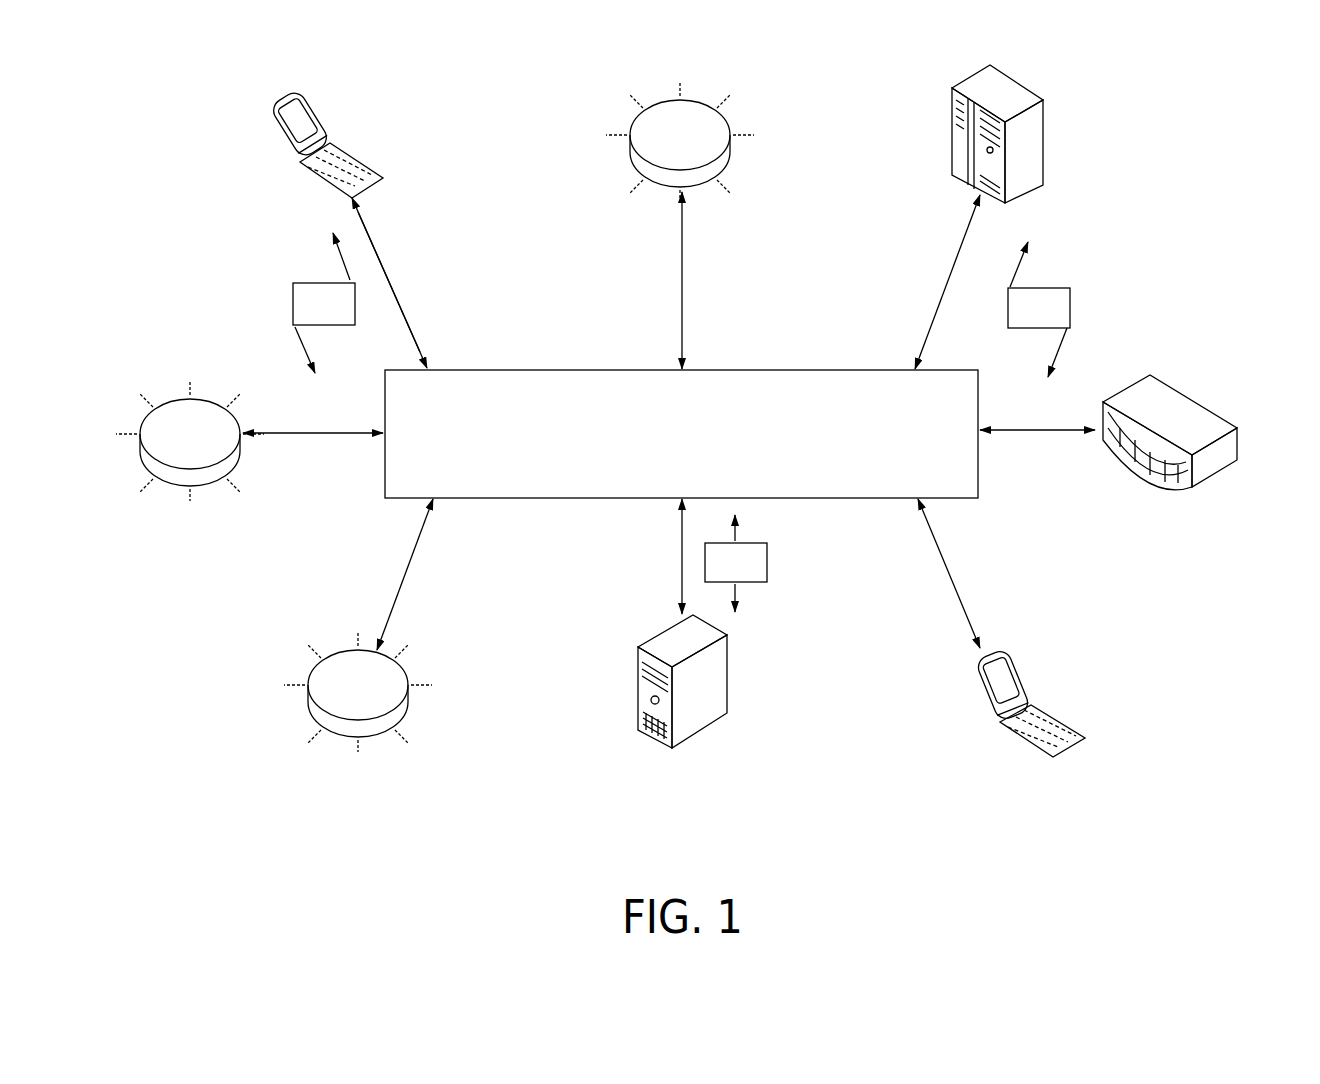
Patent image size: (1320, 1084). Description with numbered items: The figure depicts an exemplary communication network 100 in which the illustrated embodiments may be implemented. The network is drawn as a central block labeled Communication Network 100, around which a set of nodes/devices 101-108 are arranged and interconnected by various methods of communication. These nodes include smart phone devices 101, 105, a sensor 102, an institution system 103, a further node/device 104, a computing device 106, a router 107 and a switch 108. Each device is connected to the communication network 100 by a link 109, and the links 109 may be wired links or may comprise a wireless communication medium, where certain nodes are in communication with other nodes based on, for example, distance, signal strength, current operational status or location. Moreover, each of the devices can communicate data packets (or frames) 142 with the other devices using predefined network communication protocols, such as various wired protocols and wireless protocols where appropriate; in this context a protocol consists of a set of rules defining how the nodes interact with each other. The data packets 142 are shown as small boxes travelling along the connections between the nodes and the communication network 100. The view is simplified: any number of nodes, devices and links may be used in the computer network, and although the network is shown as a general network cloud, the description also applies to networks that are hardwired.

The communication network 100 is at (705, 473).
The smart phone device 101 is at (355, 157).
The sensor 102 is at (730, 122).
The institution system 103 is at (1043, 140).
The node/device 104 is at (1200, 400).
The smart phone device 105 is at (1058, 720).
The computing device 106 is at (655, 633).
The router 107 is at (340, 738).
The switch 108 is at (208, 485).
The link 109 is at (408, 323).
The data packet 142 is at (681, 422).